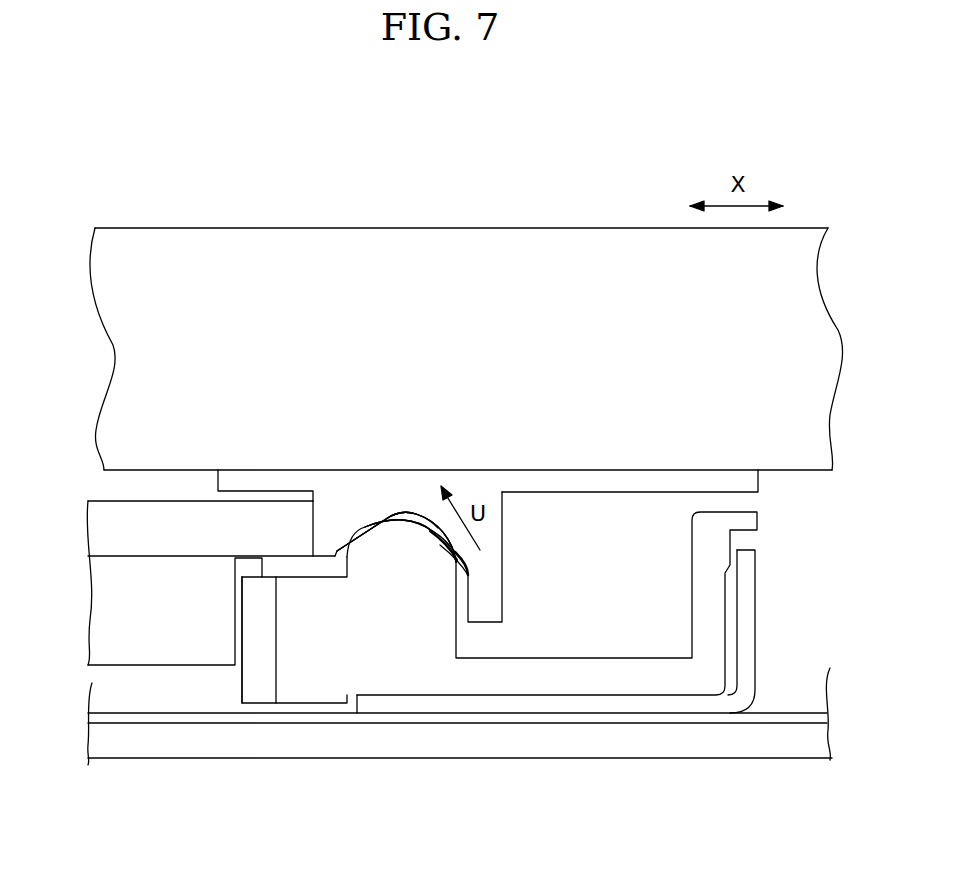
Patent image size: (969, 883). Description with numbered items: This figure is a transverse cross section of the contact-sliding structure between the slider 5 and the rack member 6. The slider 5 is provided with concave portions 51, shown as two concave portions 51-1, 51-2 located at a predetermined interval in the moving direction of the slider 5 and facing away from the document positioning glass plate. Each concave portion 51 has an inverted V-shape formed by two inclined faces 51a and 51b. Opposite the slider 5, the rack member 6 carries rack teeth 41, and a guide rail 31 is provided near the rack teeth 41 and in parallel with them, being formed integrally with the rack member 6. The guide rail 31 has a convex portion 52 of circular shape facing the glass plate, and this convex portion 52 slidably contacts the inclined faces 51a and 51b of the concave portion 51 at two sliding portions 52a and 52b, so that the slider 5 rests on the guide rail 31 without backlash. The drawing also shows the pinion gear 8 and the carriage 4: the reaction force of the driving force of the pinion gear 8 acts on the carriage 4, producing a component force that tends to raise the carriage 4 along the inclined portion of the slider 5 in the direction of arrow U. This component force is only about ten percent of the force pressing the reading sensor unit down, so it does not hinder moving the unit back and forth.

The carriage 4 is at (552, 258).
The slider 5 is at (540, 482).
The rack member 6 is at (308, 667).
The pinion gear 8 is at (138, 623).
The guide rail 31 is at (377, 572).
The rack teeth 41 is at (253, 690).
The concave portion 51 is at (425, 347).
The concave portion 51-1 is at (426, 349).
The concave portion 51-2 is at (426, 366).
The inclined face 51a is at (370, 523).
The inclined face 51b is at (445, 540).
The convex portion 52 is at (417, 514).
The sliding portion 52a is at (376, 354).
The sliding portion 52b is at (543, 688).